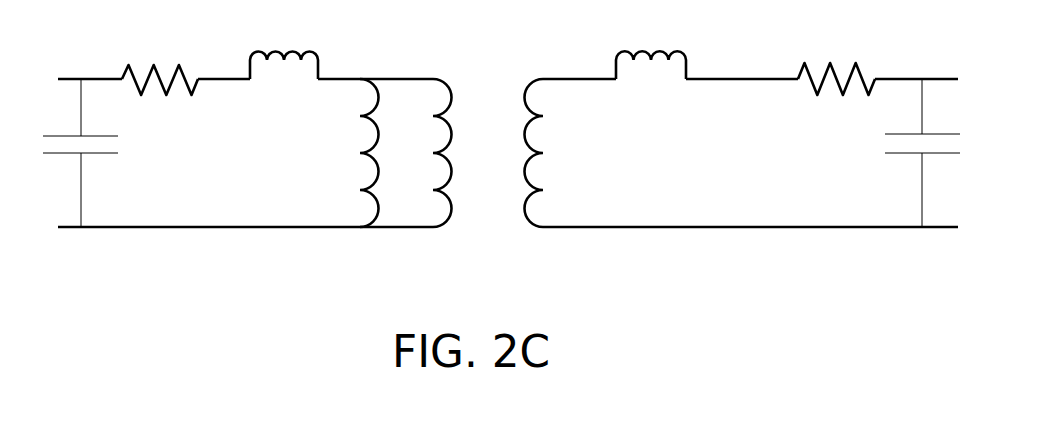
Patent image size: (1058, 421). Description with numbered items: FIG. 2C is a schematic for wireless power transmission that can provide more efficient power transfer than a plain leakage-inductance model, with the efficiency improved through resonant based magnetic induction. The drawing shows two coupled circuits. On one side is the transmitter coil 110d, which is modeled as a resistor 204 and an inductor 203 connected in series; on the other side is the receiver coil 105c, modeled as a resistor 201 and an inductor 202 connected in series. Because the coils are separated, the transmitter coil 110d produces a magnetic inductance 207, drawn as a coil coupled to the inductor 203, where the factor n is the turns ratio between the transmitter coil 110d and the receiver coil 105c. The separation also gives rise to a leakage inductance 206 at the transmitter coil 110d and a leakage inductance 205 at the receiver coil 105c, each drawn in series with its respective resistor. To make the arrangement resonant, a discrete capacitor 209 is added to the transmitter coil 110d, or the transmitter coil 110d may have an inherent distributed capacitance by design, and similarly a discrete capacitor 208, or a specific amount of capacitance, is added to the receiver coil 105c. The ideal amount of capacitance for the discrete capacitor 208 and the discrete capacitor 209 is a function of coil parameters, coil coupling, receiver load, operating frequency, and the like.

The transmitter coil 110d is at (297, 159).
The receiver coil 105c is at (712, 163).
The resistor 201 is at (856, 43).
The inductor 202 is at (553, 60).
The inductor 203 is at (456, 60).
The resistor 204 is at (181, 48).
The leakage inductance 205 is at (676, 36).
The leakage inductance 206 is at (326, 36).
The magnetic inductance 207 is at (380, 255).
The discrete capacitor 208 is at (894, 172).
The discrete capacitor 209 is at (98, 174).